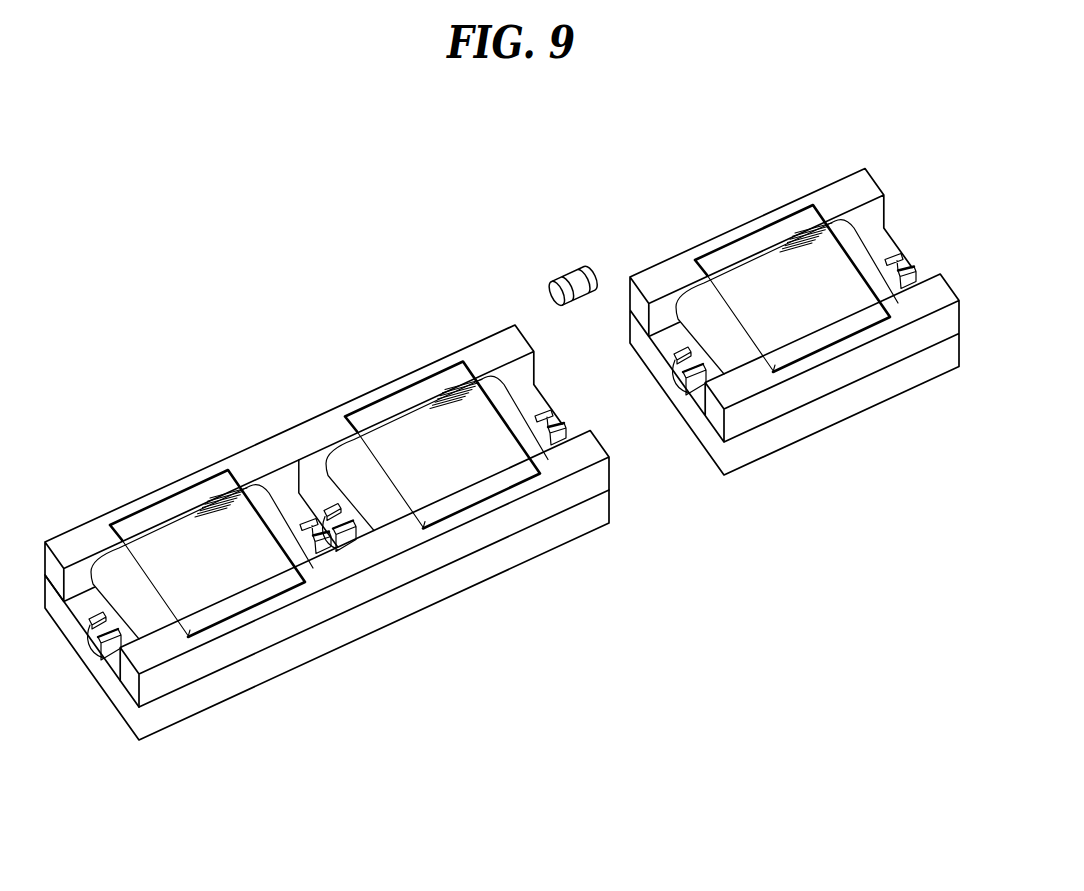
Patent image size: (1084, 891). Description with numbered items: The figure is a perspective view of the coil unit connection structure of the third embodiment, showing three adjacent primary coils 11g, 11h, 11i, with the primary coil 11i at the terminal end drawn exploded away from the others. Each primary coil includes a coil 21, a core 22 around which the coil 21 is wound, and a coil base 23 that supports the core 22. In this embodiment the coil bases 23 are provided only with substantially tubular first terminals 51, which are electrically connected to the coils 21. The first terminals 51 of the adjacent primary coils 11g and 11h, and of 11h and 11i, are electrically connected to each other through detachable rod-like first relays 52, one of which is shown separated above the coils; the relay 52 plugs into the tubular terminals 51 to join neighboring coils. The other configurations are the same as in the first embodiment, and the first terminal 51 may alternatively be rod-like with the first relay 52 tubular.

The primary coil 11g is at (202, 595).
The primary coil 11h is at (398, 376).
The primary coil 11i is at (743, 222).
The coil 21 is at (187, 605).
The core 22 is at (235, 610).
The coil base 23 is at (303, 655).
The first terminal 51 is at (112, 647).
The first relay 52 is at (574, 277).